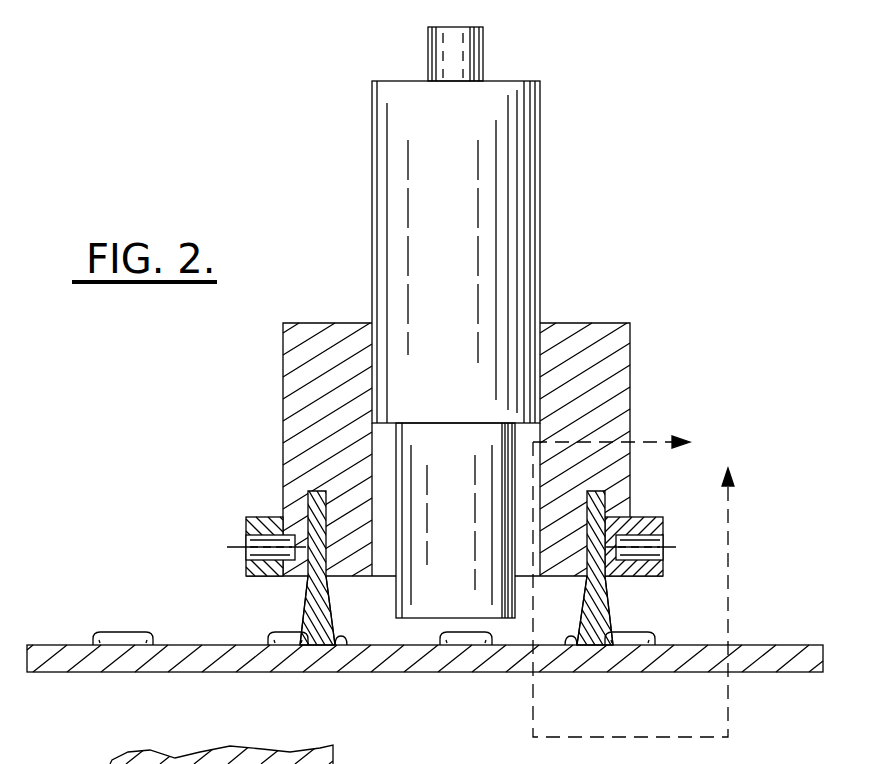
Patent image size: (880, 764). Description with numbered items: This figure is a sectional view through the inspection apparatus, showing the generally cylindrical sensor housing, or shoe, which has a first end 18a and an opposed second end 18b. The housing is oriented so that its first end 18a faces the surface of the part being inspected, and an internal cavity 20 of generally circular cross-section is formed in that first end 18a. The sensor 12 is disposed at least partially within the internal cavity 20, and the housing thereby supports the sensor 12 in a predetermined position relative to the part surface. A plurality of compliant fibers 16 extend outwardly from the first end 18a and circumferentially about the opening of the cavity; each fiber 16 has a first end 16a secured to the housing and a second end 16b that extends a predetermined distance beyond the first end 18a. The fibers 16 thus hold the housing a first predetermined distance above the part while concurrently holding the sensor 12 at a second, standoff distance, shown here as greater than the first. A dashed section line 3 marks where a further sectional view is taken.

The sensor 12 is at (541, 215).
The internal cavity 20 is at (382, 458).
The second end of sensor housing 18b is at (328, 323).
The first end of sensor housing 18a is at (358, 577).
The first end of compliant fiber 16a is at (308, 501).
The compliant fibers 16 is at (302, 616).
The second end of compliant fiber 16b is at (347, 645).
The section line 3 is at (633, 583).